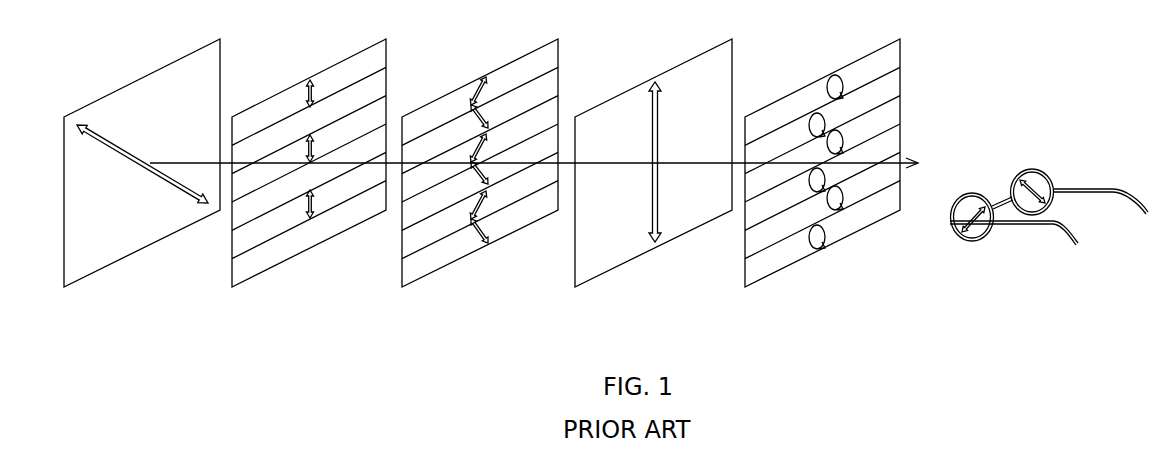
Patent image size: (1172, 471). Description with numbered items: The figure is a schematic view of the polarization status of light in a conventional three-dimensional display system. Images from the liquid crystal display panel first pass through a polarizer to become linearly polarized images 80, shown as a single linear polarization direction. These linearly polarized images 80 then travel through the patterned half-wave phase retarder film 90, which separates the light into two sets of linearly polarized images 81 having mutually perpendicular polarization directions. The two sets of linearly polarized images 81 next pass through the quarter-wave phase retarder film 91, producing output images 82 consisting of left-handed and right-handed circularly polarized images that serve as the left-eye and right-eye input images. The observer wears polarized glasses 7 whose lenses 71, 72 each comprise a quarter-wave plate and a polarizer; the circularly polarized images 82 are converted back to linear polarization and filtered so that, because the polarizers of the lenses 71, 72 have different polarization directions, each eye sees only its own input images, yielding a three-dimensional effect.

The linearly polarized images 80 is at (87, 103).
The patterned half-wave phase retarder film 90 is at (273, 92).
The two sets of linearly polarized images 81 is at (435, 100).
The quarter-wave phase retarder film 91 is at (598, 103).
The output images 82 is at (768, 102).
The polarized glasses 7 is at (1049, 138).
The lens 71 is at (1030, 168).
The lens 72 is at (972, 192).